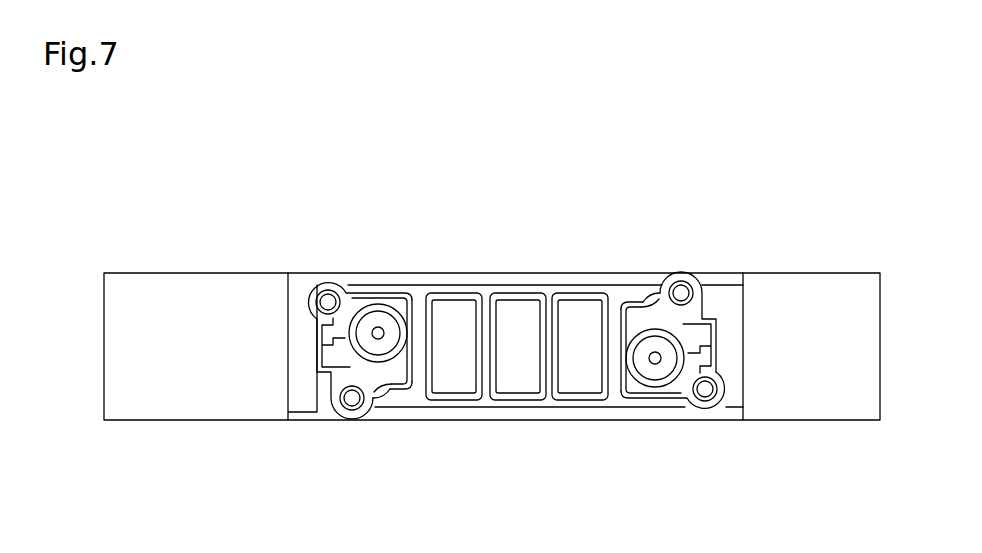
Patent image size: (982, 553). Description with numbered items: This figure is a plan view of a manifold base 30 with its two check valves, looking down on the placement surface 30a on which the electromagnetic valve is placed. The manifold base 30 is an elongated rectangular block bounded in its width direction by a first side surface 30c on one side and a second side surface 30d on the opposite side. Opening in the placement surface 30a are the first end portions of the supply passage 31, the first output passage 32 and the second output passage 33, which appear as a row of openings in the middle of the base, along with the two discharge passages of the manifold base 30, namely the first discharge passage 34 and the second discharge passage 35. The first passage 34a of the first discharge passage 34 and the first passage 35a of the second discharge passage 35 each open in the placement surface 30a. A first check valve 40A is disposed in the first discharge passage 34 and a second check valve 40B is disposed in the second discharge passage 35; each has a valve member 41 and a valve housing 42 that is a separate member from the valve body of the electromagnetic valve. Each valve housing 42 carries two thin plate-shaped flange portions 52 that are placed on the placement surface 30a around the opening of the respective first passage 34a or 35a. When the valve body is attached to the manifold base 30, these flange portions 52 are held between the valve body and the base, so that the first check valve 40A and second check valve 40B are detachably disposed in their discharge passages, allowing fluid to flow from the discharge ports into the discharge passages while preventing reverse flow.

The manifold base 30 is at (770, 273).
The placement surface 30a is at (722, 290).
The first side surface 30c is at (488, 275).
The second side surface 30d is at (490, 408).
The supply passage 31 is at (522, 392).
The first output passage 32 is at (447, 392).
The second output passage 33 is at (578, 392).
The first discharge passage 34 is at (384, 312).
The first passage 34a is at (360, 312).
The second discharge passage 35 is at (642, 372).
The first passage 35a is at (663, 390).
The first check valve 40A is at (333, 357).
The second check valve 40B is at (707, 361).
The valve member 41 is at (354, 414).
The valve housing 42 is at (414, 322).
The flange portion 52 is at (340, 338).